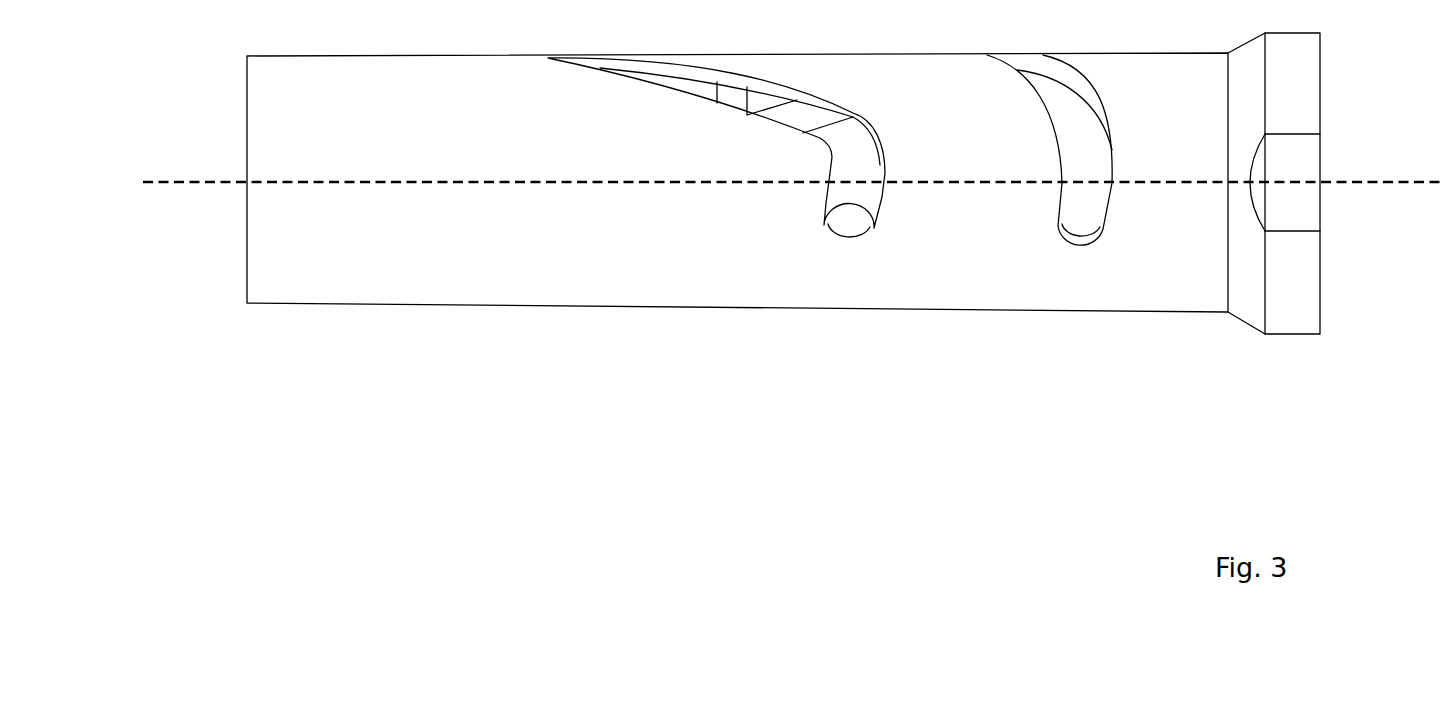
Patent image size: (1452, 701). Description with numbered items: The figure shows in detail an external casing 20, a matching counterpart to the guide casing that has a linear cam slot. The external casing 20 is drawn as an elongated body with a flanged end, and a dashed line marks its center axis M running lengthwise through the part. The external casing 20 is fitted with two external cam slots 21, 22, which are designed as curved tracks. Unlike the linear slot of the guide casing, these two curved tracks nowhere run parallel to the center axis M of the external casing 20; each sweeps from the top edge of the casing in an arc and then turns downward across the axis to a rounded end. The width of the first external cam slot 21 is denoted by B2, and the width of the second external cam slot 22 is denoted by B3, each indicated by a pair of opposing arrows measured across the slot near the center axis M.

The external casing 20 is at (425, 245).
The external cam slot 21 is at (852, 228).
The second external cam slot 22 is at (1080, 228).
The center axis M is at (791, 161).
The width of the external cam slot B2 is at (780, 163).
The width of the second external cam slot B3 is at (1007, 158).